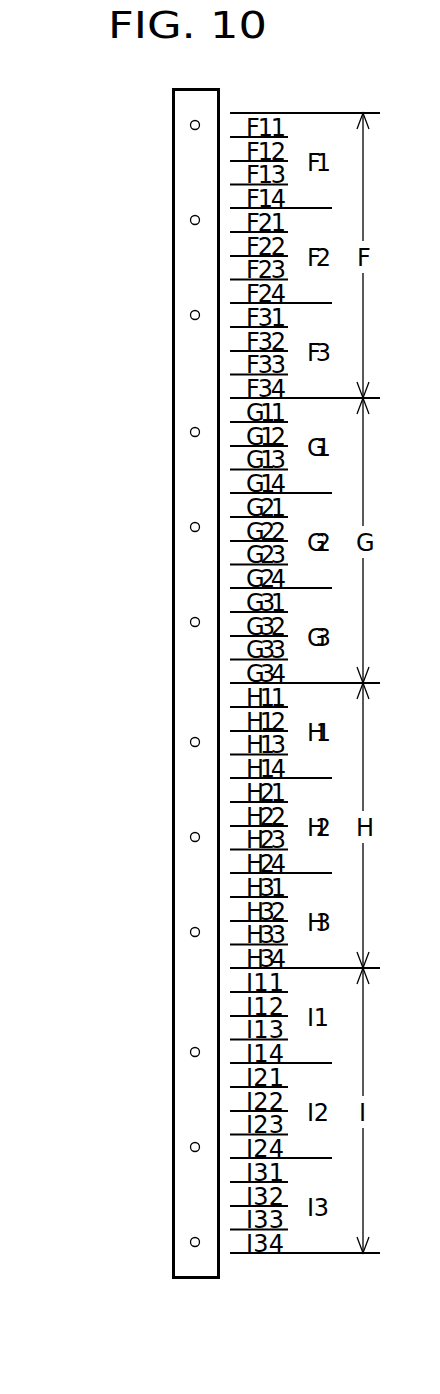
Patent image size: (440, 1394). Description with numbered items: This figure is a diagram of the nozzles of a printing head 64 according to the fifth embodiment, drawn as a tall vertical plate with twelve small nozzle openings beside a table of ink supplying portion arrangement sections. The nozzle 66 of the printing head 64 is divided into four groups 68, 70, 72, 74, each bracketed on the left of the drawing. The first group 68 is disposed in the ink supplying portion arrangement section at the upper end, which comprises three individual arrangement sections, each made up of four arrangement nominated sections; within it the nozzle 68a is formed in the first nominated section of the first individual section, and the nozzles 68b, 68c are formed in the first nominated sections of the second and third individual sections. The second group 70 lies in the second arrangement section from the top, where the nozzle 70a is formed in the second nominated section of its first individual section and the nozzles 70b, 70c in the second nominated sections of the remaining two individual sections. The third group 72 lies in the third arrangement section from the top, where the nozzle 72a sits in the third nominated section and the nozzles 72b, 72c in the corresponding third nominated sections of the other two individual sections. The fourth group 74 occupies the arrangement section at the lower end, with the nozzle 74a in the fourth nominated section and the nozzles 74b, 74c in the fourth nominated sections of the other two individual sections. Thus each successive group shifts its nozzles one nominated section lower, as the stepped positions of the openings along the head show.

The printing head 64 is at (166, 84).
The nozzle 66 is at (52, 1152).
The first group 68 is at (106, 120).
The nozzle 68a is at (190, 125).
The nozzle 68b is at (190, 220).
The nozzle 68c is at (190, 315).
The second group 70 is at (106, 427).
The nozzle 70a is at (190, 432).
The nozzle 70b is at (190, 527).
The nozzle 70c is at (190, 622).
The third group 72 is at (106, 737).
The nozzle 72a is at (190, 742).
The nozzle 72b is at (190, 837).
The nozzle 72c is at (190, 932).
The fourth group 74 is at (106, 1047).
The nozzle 74a is at (190, 1052).
The nozzle 74b is at (190, 1147).
The nozzle 74c is at (190, 1242).